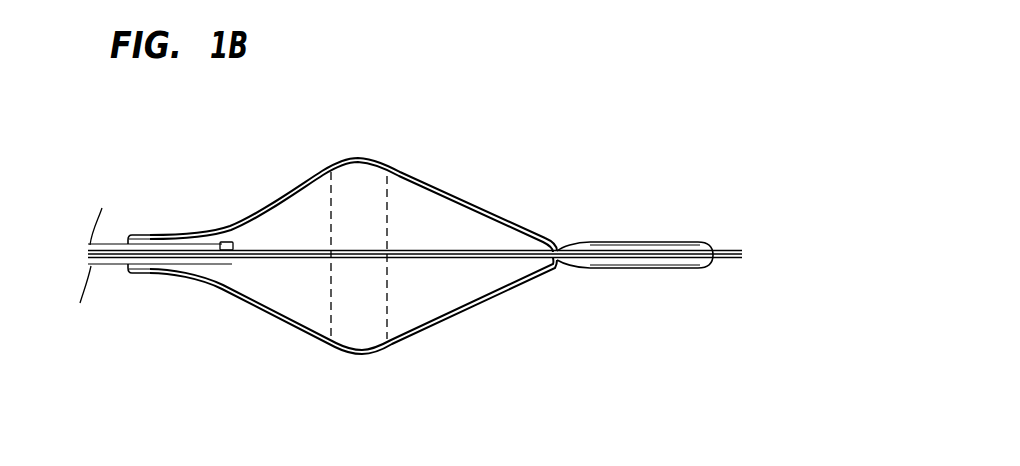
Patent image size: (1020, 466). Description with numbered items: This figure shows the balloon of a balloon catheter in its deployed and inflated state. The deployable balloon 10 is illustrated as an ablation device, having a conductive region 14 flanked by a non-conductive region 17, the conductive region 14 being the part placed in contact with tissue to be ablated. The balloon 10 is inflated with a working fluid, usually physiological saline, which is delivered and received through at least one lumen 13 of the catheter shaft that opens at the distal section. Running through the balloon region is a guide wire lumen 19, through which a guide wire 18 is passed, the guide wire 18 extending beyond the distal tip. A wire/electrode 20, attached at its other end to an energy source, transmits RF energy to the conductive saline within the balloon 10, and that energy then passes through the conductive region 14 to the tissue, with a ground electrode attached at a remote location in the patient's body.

The deployable balloon 10 is at (404, 168).
The lumen 13 is at (158, 266).
The conductive region 14 is at (341, 176).
The non-conductive region 17 is at (264, 287).
The guide wire 18 is at (743, 244).
The guide wire lumen 19 is at (485, 246).
The wire/electrode 20 is at (221, 237).